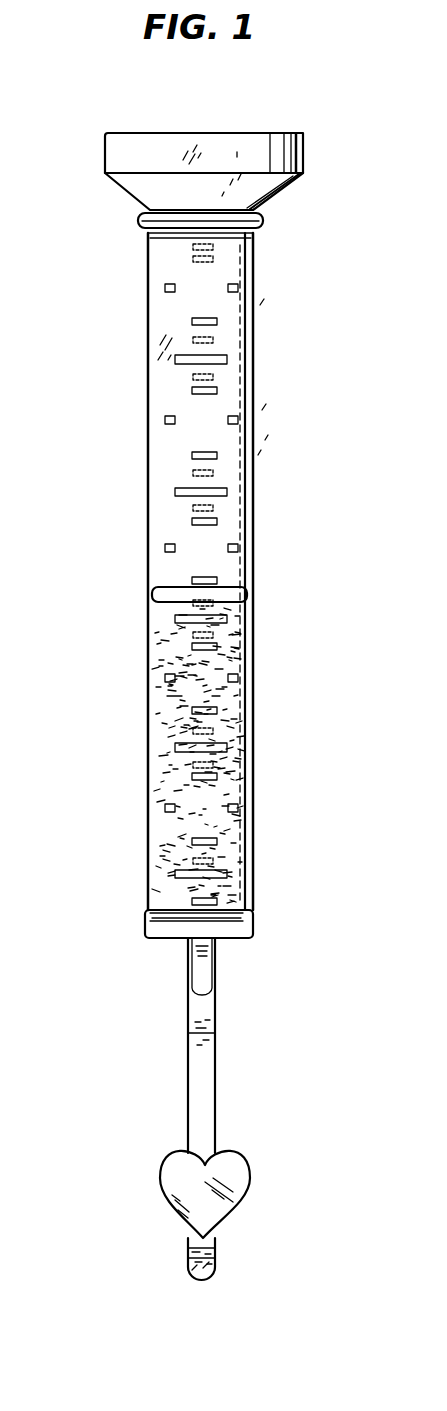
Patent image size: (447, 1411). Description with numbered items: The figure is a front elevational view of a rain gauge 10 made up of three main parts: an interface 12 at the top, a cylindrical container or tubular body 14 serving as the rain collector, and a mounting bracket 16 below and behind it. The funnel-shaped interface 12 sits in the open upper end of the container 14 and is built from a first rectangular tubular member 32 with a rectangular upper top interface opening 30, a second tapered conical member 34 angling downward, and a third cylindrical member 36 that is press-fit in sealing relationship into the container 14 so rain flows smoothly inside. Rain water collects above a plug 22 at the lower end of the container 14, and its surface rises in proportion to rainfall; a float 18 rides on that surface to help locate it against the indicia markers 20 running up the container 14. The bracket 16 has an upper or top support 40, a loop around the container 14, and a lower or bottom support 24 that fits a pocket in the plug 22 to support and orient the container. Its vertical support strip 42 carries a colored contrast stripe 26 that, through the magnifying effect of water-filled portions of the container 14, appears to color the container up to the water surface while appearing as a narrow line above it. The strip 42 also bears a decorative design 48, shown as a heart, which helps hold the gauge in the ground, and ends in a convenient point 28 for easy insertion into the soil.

The rain gauge 10 is at (68, 490).
The interface 12 is at (94, 161).
The container or tubular body 14 is at (252, 690).
The mounting bracket 16 is at (231, 1086).
The float 18 is at (252, 590).
The indicia markers 20 is at (228, 360).
The plug 22 is at (255, 930).
The lower or bottom support 24 is at (188, 950).
The colored contrast stripe 26 is at (258, 423).
The point 28 is at (205, 1273).
The upper top interface opening 30 is at (187, 133).
The first rectangular tubular member 32 is at (293, 150).
The second tapered conical member 34 is at (283, 190).
The third cylindrical member 36 is at (260, 213).
The upper or top support 40 is at (141, 221).
The vertical support strip 42 is at (232, 564).
The decorative design 48 is at (237, 1175).